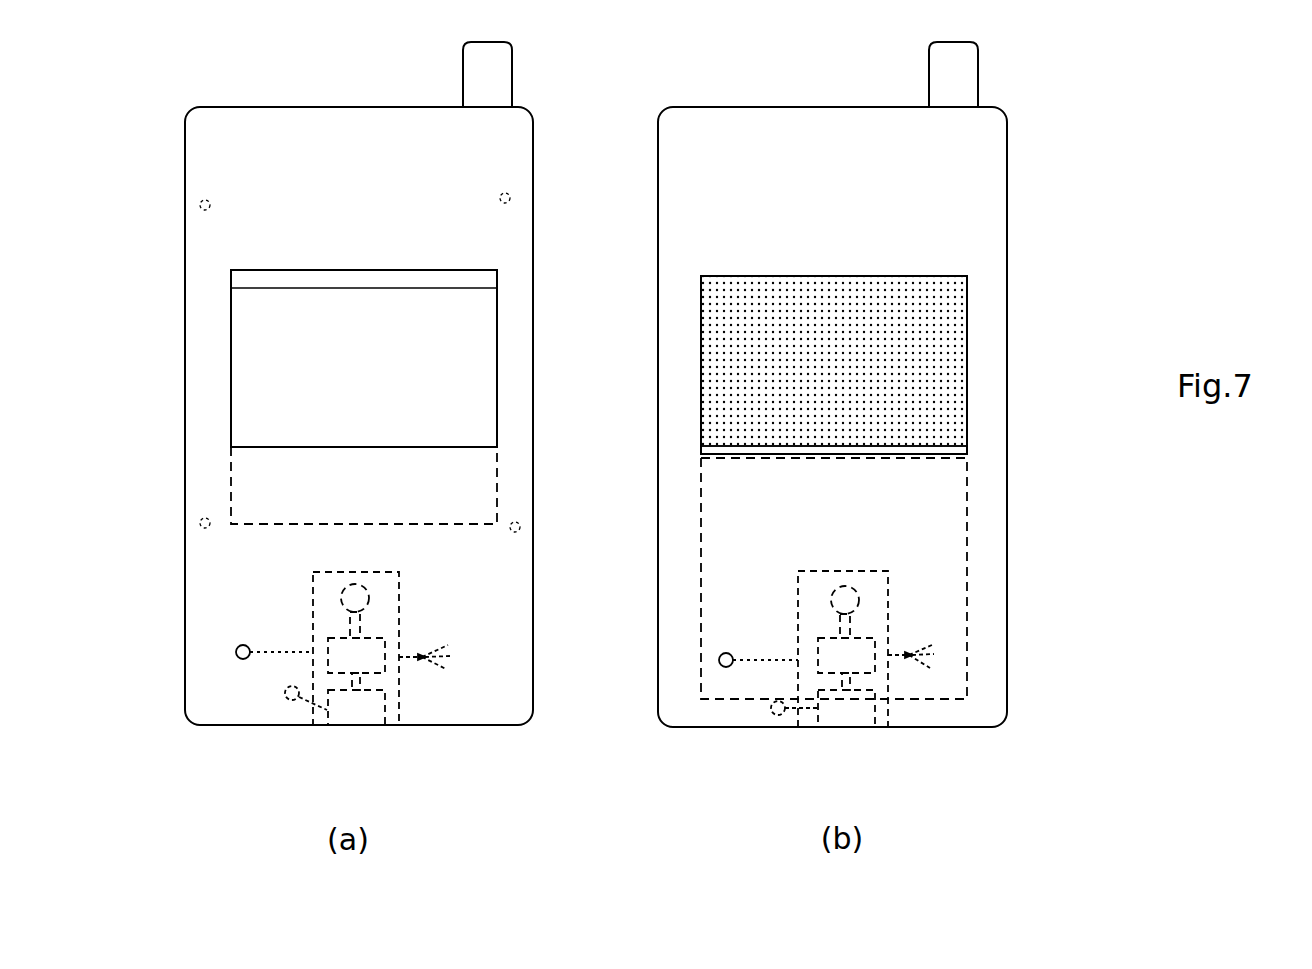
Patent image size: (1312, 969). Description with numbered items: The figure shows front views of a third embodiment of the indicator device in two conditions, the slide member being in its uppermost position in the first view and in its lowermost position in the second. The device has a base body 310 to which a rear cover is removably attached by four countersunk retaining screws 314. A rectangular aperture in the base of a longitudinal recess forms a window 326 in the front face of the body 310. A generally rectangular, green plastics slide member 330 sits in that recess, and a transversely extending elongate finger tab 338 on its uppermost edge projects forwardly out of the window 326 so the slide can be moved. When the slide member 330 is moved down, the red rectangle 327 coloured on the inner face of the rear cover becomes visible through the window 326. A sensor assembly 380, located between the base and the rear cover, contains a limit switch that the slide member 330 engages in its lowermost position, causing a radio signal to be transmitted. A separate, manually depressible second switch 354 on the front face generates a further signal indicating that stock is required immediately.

The body 310 is at (213, 708).
The countersunk retaining screws 314 is at (199, 201).
The window 326 is at (233, 342).
The red rectangle 327 is at (938, 395).
The slide member 330 is at (473, 364).
The finger tab 338 is at (482, 281).
The second switch 354 is at (245, 645).
The sensor assembly 380 is at (405, 588).